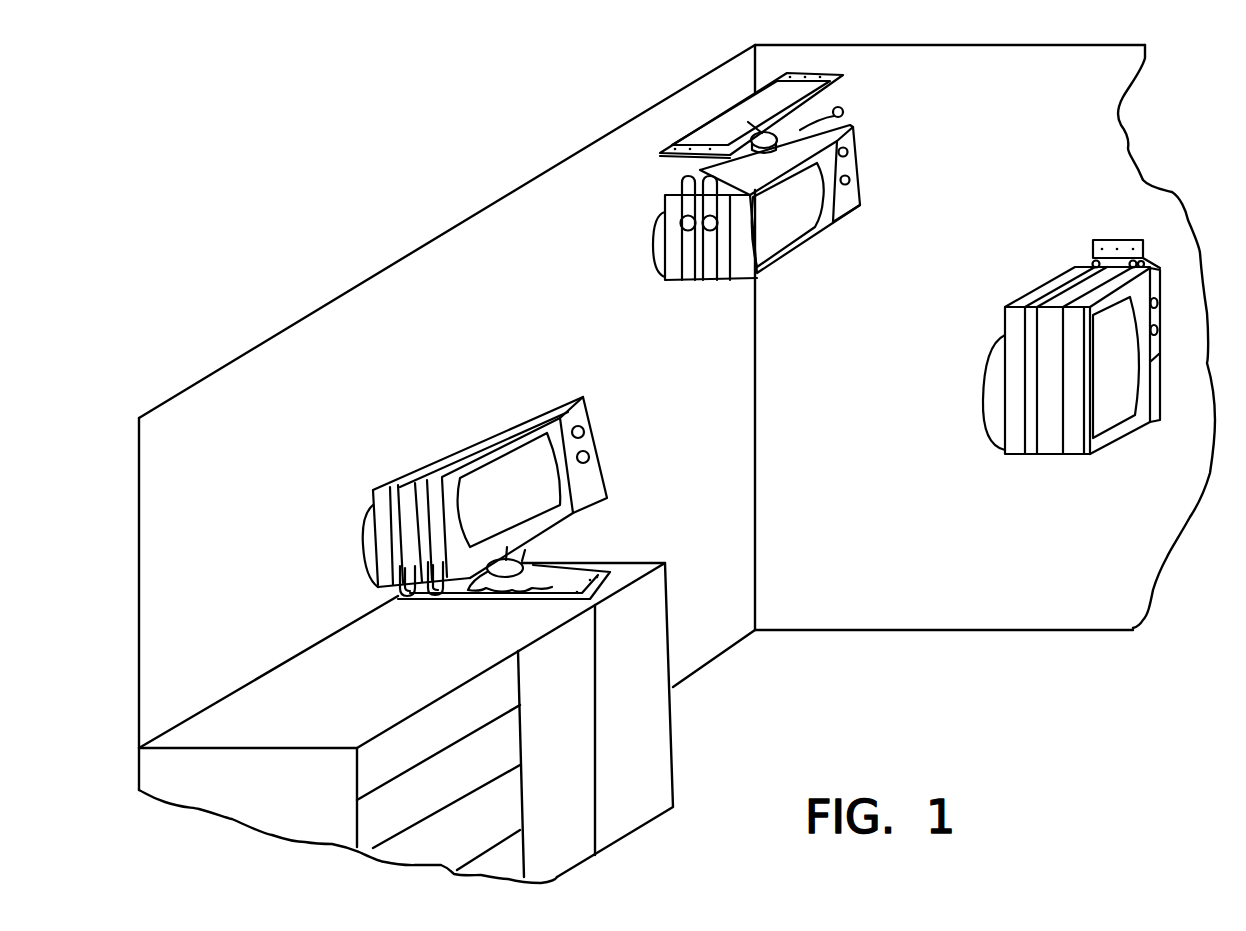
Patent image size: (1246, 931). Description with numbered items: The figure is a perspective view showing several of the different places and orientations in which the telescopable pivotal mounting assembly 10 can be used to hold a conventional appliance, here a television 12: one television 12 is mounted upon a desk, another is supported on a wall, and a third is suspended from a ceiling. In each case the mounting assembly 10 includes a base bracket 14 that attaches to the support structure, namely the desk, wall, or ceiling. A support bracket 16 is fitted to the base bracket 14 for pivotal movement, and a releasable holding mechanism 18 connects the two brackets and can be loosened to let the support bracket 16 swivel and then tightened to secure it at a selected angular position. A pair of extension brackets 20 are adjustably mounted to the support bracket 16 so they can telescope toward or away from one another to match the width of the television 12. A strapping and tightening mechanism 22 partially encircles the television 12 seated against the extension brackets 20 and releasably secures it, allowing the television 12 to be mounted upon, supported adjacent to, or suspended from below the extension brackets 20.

The telescopable pivotal mounting assembly 10 is at (794, 366).
The television 12 is at (818, 240).
The base bracket 14 is at (660, 152).
The support bracket 16 is at (768, 170).
The releasable holding mechanism 18 is at (748, 126).
The extension brackets 20 is at (843, 113).
The strapping and tightening mechanism 22 is at (668, 232).